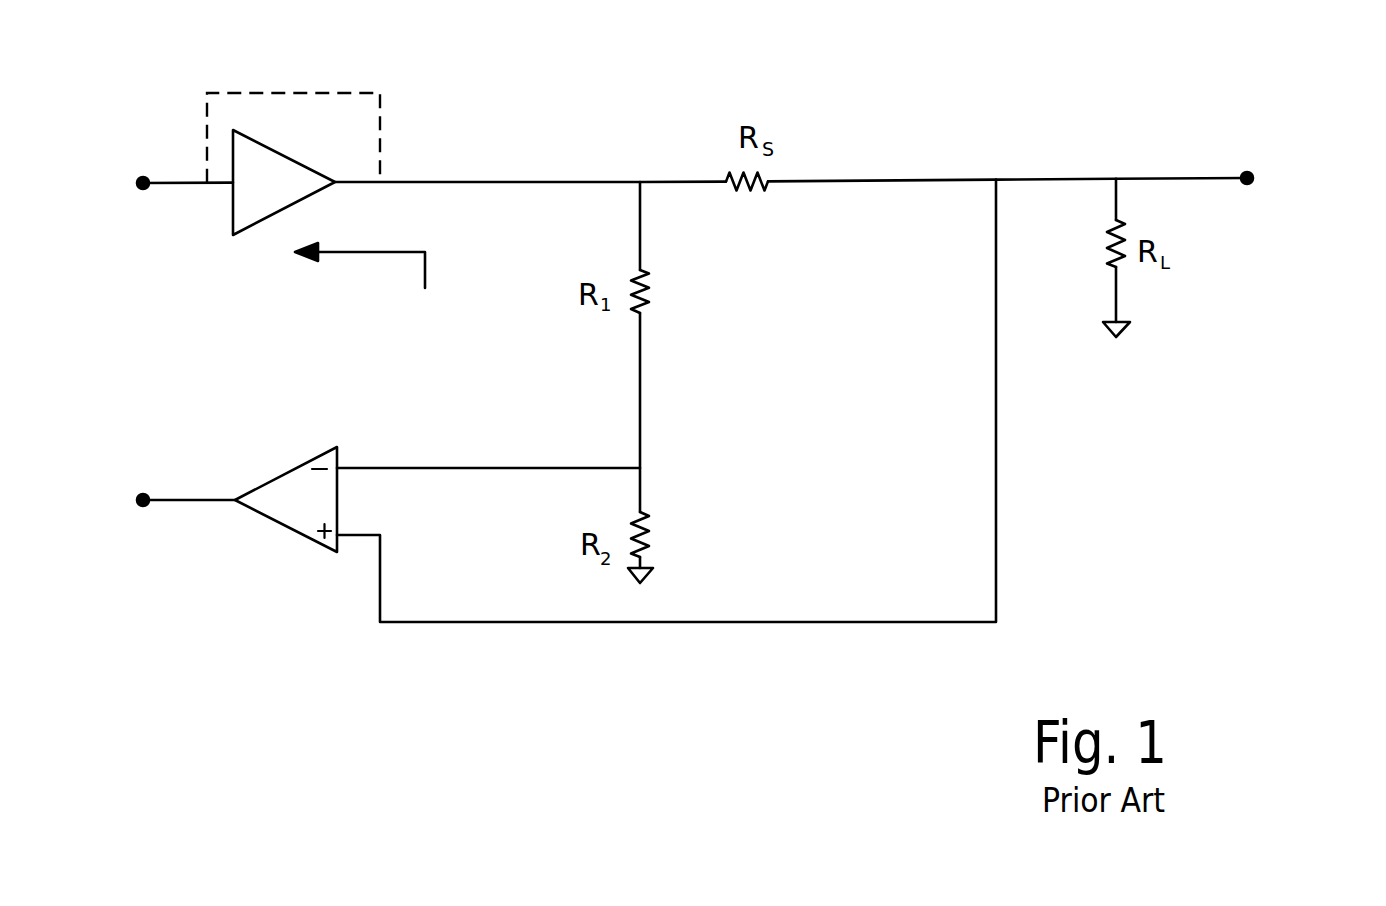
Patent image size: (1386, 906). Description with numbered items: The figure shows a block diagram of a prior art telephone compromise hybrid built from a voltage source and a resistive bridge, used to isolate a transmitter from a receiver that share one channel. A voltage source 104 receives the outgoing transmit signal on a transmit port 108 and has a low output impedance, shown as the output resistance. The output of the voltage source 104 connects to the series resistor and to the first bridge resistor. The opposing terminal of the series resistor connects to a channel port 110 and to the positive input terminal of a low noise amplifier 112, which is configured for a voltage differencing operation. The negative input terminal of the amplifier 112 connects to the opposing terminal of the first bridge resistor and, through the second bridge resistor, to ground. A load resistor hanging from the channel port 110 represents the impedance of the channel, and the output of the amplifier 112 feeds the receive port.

The voltage source 104 is at (272, 150).
The transmit port 108 is at (143, 182).
The channel port 110 is at (1247, 184).
The low noise amplifier 112 is at (277, 524).